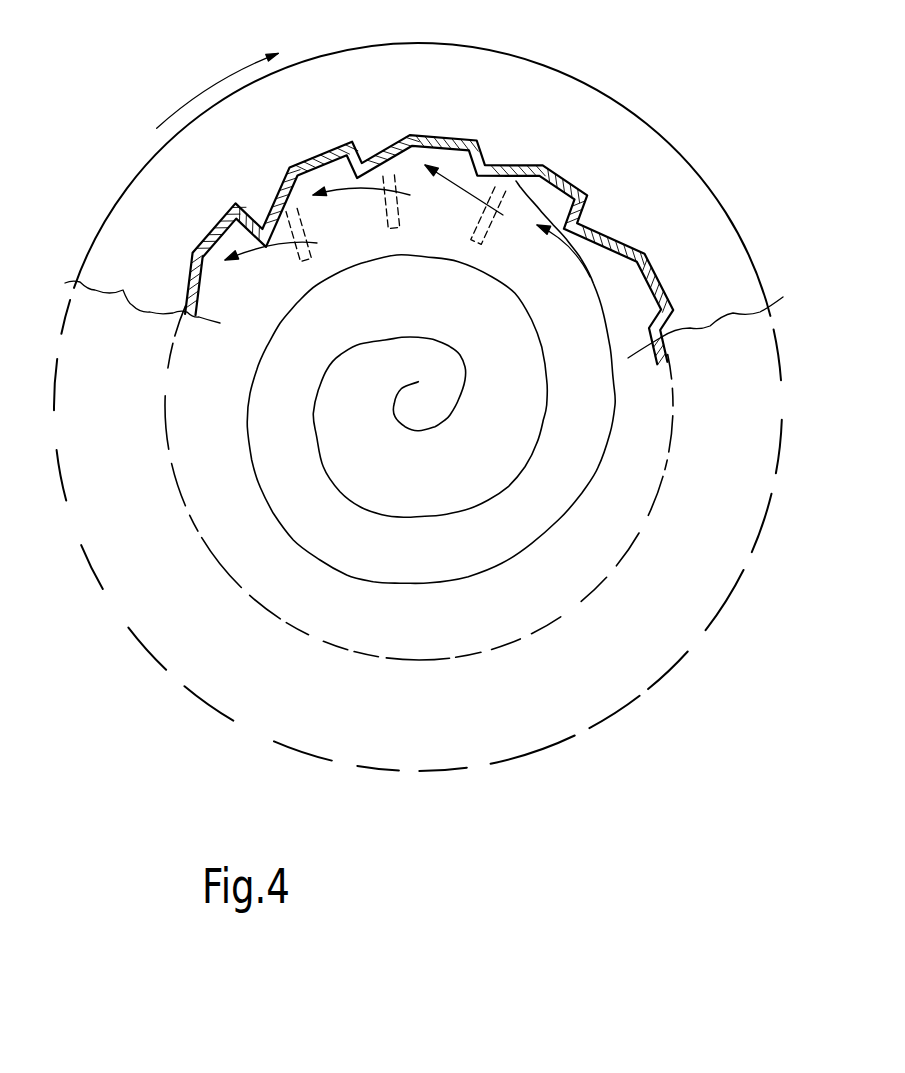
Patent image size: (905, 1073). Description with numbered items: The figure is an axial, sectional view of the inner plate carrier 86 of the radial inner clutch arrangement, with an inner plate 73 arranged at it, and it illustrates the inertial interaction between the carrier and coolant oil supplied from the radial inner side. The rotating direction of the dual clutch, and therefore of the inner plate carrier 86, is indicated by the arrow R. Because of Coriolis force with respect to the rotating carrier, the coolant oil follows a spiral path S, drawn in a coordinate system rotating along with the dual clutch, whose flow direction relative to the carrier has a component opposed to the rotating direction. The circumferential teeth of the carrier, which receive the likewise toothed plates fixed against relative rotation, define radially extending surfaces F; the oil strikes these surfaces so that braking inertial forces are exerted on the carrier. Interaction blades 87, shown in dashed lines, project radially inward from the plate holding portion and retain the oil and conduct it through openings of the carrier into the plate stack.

The inner plate 73 is at (608, 122).
The inner plate carrier 86 is at (475, 137).
The interaction blades 87 is at (394, 197).
The spiral path of the coolant oil S is at (380, 583).
The surfaces F is at (537, 185).
The rotating direction R is at (218, 90).